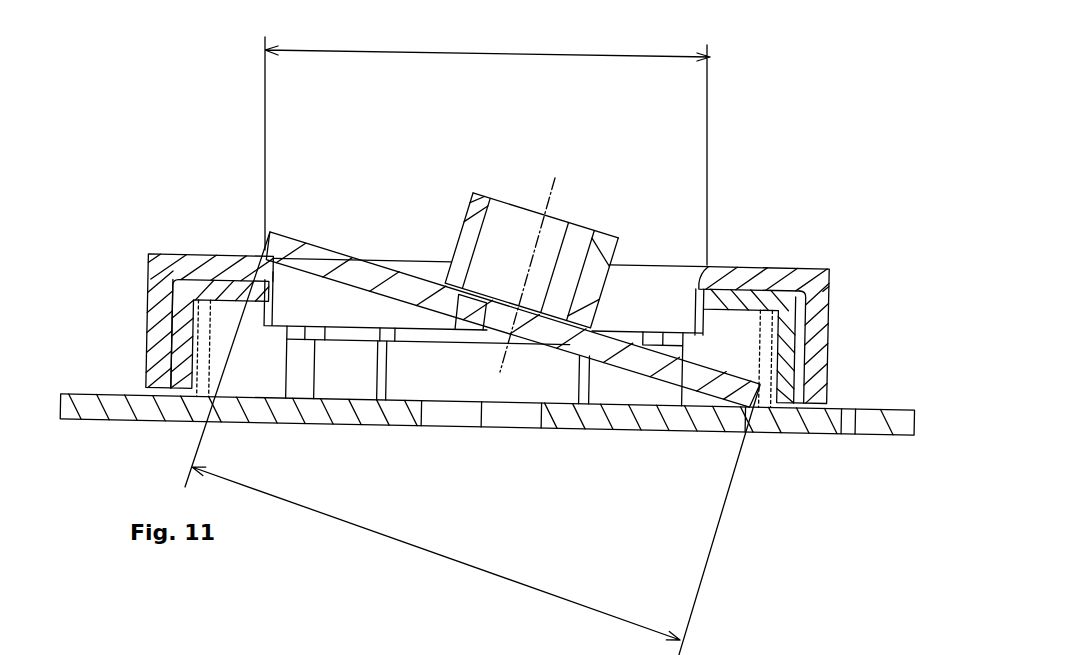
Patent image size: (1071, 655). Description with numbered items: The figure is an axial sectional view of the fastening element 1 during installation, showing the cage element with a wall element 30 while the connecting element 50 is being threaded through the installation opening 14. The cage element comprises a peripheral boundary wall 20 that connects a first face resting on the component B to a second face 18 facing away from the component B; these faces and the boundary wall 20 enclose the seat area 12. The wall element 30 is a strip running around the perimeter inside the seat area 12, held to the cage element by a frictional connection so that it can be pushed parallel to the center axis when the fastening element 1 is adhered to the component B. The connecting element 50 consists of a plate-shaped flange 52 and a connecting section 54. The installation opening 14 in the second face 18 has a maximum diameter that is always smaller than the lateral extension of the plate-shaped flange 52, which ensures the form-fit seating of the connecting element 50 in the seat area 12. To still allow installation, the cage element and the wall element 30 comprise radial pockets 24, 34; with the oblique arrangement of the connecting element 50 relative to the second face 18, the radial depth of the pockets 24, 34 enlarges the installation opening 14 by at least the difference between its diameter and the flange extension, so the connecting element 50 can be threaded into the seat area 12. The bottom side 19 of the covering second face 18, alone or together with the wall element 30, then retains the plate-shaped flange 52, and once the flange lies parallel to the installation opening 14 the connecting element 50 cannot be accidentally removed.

The fastening element 1 is at (925, 169).
The seat area 12 is at (212, 268).
The installation opening 14 is at (648, 300).
The second face 18 is at (750, 270).
The bottom side 19 is at (738, 292).
The boundary wall 20 is at (147, 265).
The pocket 24 is at (820, 325).
The wall element 30 is at (183, 320).
The pocket 34 is at (790, 365).
The connecting element 50 is at (458, 238).
The plate-shaped flange 52 is at (328, 254).
The connecting section 54 is at (473, 192).
The component B is at (850, 428).